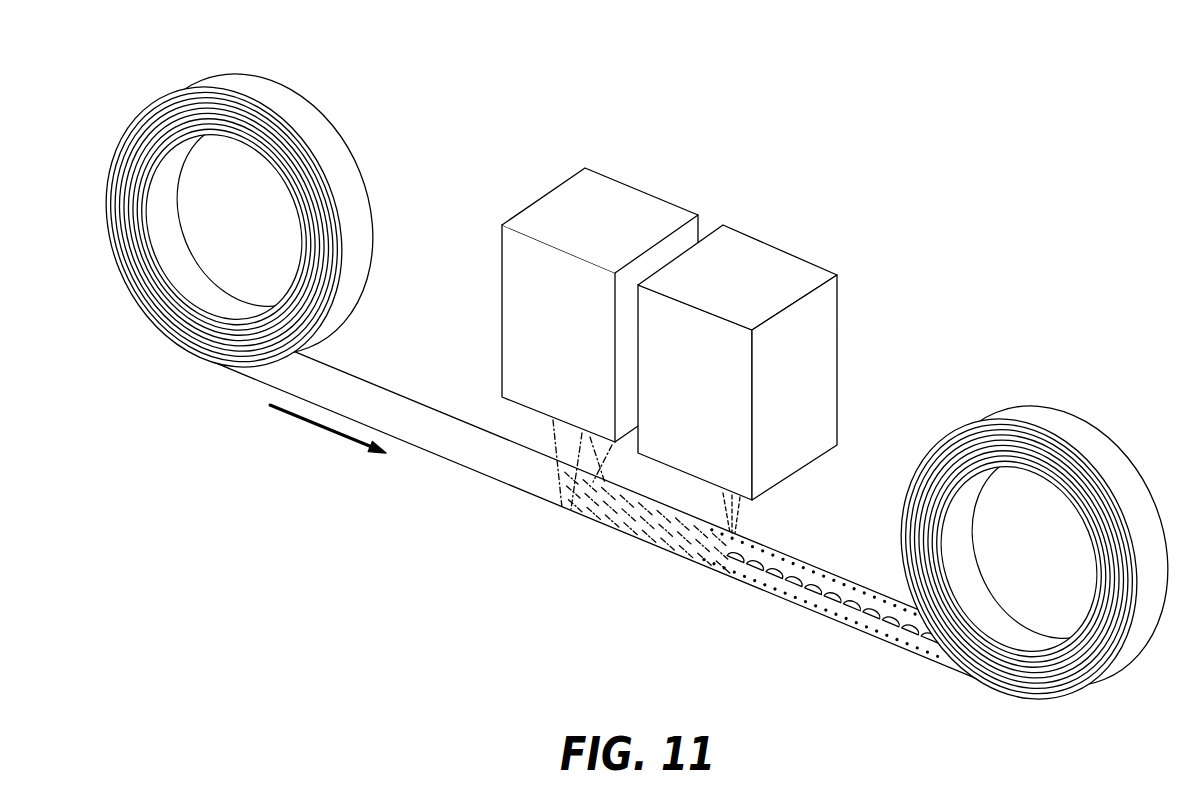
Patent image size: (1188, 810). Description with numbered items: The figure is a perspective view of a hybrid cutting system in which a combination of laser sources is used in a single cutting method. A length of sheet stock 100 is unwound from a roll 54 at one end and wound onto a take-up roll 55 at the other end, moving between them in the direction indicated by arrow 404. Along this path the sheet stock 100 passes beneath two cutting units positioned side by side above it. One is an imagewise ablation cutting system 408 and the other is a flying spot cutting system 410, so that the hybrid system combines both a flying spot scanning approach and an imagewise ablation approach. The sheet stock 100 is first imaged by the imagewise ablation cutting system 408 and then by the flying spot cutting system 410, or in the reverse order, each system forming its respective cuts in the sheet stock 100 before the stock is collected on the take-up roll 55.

The roll 54 is at (282, 85).
The take-up roll 55 is at (1077, 413).
The sheet stock 100 is at (372, 398).
The arrow 404 is at (315, 423).
The imagewise ablation cutting system 408 is at (633, 185).
The flying spot cutting system 410 is at (777, 247).